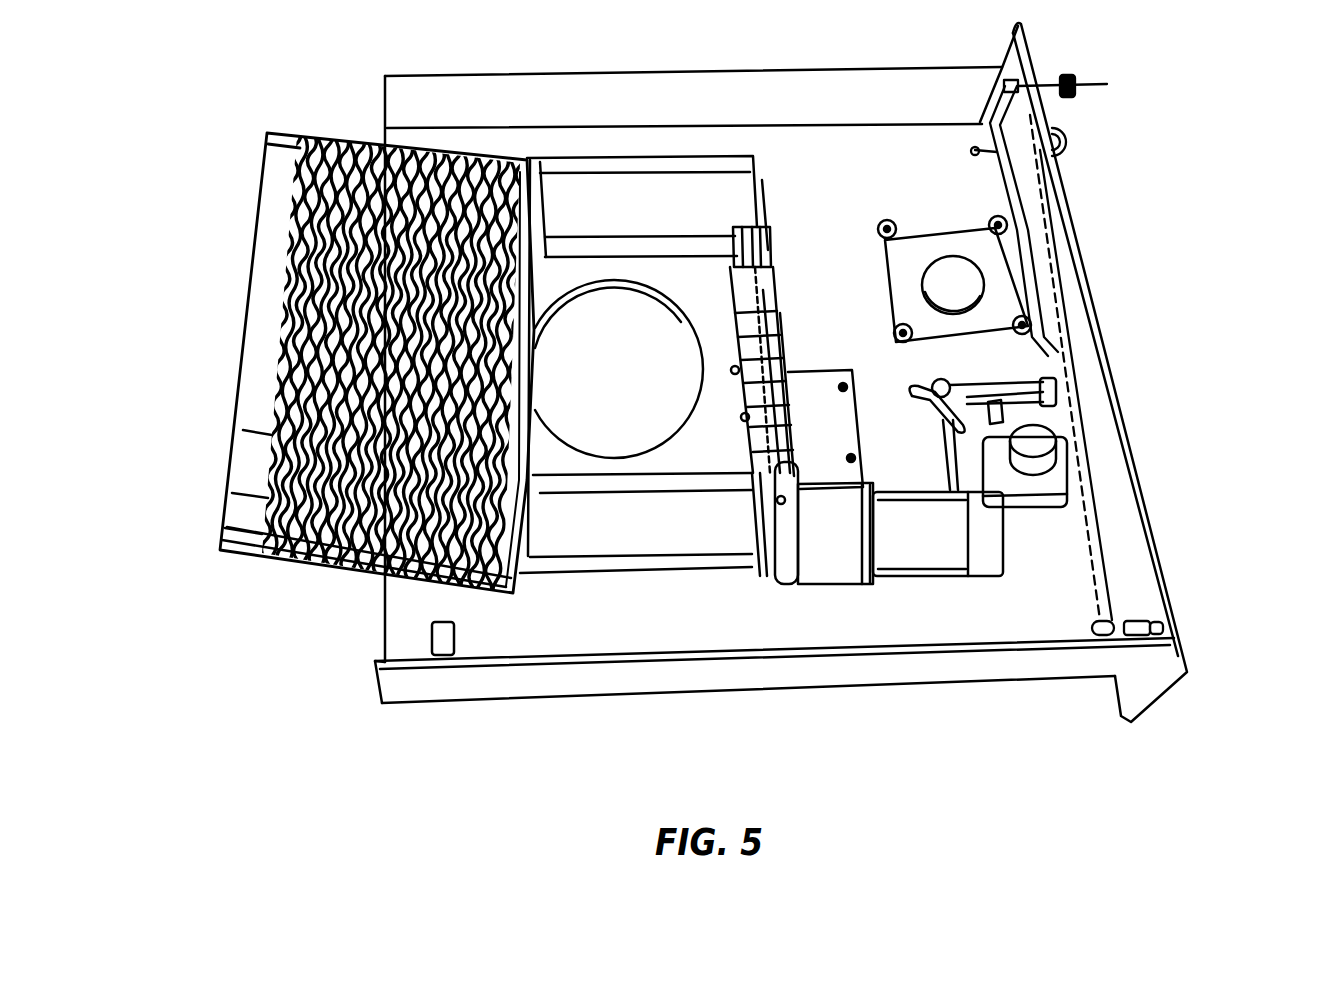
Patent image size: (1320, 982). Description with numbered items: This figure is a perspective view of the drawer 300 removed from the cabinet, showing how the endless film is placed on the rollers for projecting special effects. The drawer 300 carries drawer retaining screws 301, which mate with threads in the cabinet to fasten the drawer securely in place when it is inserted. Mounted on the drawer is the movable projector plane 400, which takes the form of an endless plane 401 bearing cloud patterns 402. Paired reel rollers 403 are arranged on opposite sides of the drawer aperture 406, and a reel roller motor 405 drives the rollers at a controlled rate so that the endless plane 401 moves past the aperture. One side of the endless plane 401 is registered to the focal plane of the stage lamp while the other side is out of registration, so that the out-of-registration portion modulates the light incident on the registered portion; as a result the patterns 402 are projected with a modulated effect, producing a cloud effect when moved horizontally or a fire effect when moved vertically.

The drawer 300 is at (1150, 444).
The drawer retaining screws 301 is at (1080, 84).
The movable projector plane 400 is at (238, 311).
The endless plane 401 is at (235, 463).
The cloud patterns 402 is at (313, 197).
The paired reel rollers 403 is at (590, 176).
The reel roller motor 405 is at (947, 577).
The drawer aperture 406 is at (700, 372).